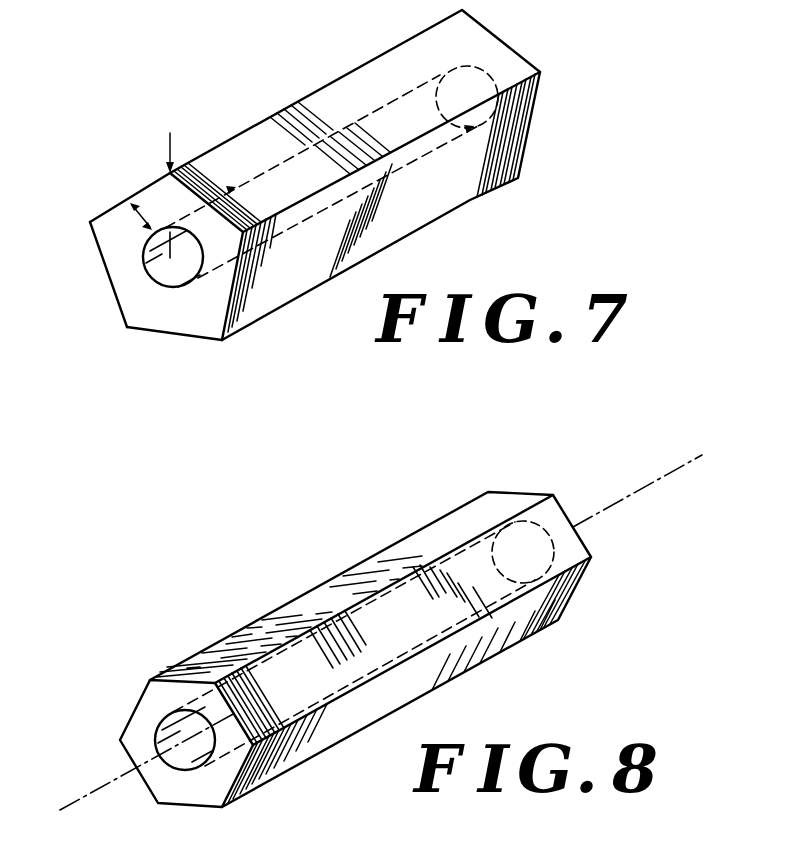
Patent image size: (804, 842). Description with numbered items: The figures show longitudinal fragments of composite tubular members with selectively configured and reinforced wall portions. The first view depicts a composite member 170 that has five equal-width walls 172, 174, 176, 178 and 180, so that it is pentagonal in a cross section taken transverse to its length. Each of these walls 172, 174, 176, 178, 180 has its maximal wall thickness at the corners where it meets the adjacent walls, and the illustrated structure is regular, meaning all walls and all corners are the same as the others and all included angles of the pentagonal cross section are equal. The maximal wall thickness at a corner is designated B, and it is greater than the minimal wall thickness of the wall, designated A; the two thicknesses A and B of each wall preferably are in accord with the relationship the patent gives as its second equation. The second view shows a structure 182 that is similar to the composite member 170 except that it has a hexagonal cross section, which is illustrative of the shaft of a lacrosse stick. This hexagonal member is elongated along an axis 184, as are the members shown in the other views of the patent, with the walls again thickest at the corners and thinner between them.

In FIG. 7, the composite member 170 is at (477, 50).
In FIG. 7, the wall 172 is at (118, 202).
In FIG. 7, the wall 174 is at (205, 181).
In FIG. 7, the wall 176 is at (243, 273).
In FIG. 7, the wall 178 is at (168, 334).
In FIG. 7, the wall 180 is at (105, 274).
In FIG. 8, the structure 182 is at (415, 636).
In FIG. 8, the axis 184 is at (627, 497).
In FIG. 7, the minimal wall thickness A is at (137, 226).
In FIG. 7, the maximal wall thickness B is at (167, 200).